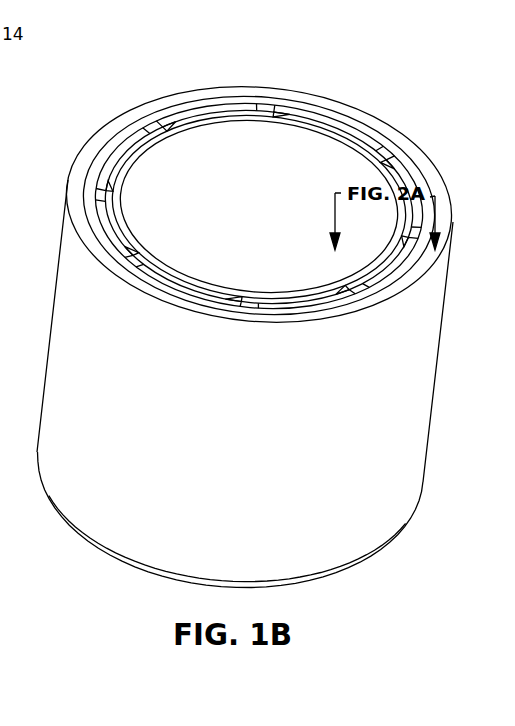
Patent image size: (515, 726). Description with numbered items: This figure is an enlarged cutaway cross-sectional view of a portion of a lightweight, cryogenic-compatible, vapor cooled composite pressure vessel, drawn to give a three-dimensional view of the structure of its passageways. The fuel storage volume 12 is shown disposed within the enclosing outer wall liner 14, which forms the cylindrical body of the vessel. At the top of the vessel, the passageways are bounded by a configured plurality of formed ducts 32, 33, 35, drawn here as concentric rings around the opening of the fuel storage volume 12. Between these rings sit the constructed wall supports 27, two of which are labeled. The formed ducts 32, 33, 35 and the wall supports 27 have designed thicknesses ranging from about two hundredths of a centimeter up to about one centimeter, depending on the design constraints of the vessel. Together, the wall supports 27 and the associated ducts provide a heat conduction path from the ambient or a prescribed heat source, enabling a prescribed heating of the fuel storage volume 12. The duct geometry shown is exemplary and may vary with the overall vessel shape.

The fuel storage volume 12 is at (261, 218).
The enclosing outer wall liner 14 is at (250, 452).
The wall supports 27 is at (387, 150).
The formed duct 32 is at (110, 176).
The formed duct 33 is at (112, 230).
The formed duct 35 is at (168, 118).